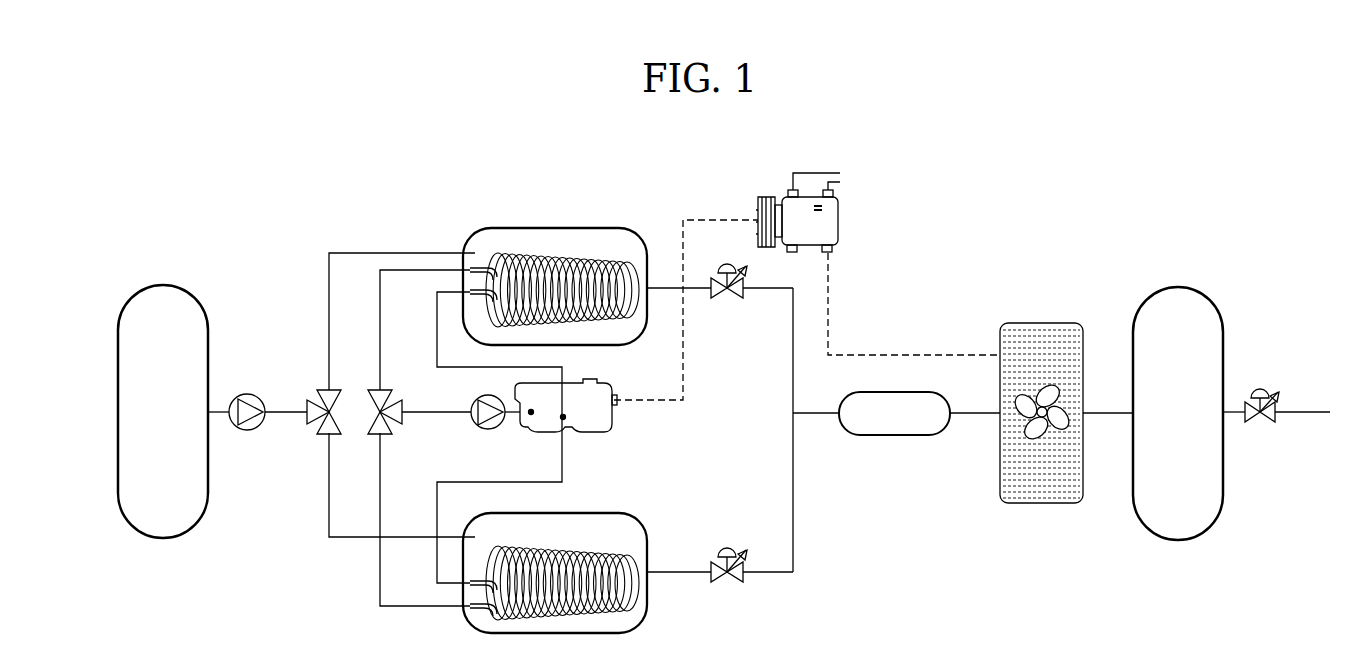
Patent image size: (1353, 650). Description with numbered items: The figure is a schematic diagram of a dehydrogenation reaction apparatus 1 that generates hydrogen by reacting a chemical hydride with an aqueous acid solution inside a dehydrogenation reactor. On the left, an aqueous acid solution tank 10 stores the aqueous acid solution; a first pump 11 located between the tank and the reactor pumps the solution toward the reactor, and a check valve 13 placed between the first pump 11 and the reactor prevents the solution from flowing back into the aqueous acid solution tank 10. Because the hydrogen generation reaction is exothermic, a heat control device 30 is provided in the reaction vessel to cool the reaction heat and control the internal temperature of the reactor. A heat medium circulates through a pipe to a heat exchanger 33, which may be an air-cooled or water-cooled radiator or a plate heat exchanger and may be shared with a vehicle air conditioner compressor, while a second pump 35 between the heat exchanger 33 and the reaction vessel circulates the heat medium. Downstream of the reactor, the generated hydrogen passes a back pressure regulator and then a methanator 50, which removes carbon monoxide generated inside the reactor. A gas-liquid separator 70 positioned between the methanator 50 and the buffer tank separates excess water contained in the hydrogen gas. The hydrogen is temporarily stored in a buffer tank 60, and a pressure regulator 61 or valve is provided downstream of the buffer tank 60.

The dehydrogenation reaction apparatus 1 is at (256, 245).
The aqueous acid solution tank 10 is at (118, 410).
The first pump 11 is at (244, 394).
The check valve 13 is at (323, 390).
The heat control device 30 is at (550, 248).
The heat exchanger 33 is at (613, 418).
The second pump 35 is at (488, 430).
The methanator 50 is at (895, 437).
The buffer tank 60 is at (1223, 483).
The pressure regulator 61 is at (1262, 390).
The gas-liquid separator 70 is at (1042, 323).